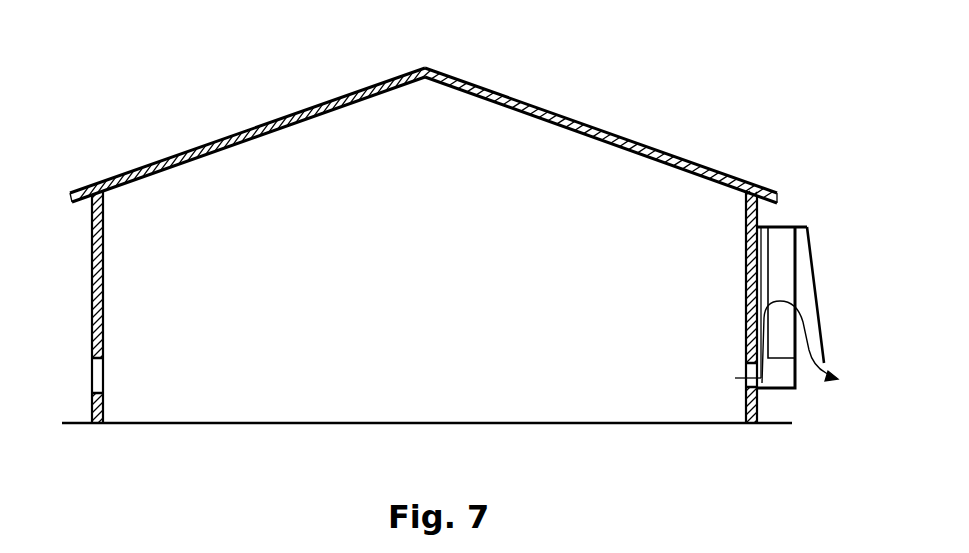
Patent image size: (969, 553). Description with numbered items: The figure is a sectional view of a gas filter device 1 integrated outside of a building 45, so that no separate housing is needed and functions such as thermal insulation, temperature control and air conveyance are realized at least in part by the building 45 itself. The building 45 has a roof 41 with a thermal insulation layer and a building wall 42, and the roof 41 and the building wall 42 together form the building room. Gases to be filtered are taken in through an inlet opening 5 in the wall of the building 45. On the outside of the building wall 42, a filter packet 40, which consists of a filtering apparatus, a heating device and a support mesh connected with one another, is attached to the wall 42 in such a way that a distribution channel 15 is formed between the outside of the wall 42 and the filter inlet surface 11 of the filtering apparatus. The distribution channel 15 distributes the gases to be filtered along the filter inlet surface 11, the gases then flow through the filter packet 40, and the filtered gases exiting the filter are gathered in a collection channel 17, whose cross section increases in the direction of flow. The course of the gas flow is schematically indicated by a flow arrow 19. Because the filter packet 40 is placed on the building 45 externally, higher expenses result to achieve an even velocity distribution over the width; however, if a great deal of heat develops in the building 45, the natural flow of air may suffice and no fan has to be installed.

The gas filter device 1 is at (785, 289).
The inlet opening 5 is at (99, 376).
The filter inlet surface 11 is at (768, 283).
The distribution channel 15 is at (763, 260).
The collection channel 17 is at (808, 302).
The flow arrow 19 is at (875, 327).
The filter packet 40 is at (783, 264).
The roof 41 is at (596, 130).
The building wall 42 is at (752, 192).
The building 45 is at (183, 152).